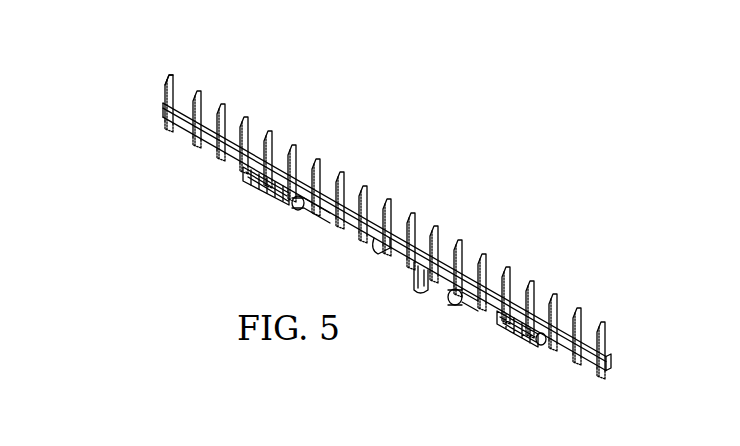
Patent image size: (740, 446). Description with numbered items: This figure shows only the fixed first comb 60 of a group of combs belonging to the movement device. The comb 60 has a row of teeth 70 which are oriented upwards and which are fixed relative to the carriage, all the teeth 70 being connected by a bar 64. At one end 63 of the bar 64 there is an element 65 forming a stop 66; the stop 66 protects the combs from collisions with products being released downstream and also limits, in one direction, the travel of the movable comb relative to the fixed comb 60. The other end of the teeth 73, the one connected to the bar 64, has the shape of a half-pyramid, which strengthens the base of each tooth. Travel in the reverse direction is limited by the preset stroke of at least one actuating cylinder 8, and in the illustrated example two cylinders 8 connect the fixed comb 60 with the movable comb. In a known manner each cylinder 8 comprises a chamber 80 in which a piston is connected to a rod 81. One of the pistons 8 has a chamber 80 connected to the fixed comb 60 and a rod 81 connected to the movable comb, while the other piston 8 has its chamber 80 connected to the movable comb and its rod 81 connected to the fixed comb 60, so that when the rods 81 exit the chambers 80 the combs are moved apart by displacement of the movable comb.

The actuating cylinder 8 is at (288, 235).
The first comb 60 is at (301, 122).
The end of the bar 63 is at (139, 110).
The bar 64 is at (232, 151).
The element forming a stop 65 is at (166, 82).
The stop 66 is at (181, 62).
The teeth 70 is at (244, 126).
The other end of the teeth 73 is at (572, 306).
The chamber 80 is at (264, 194).
The rod 81 is at (447, 293).